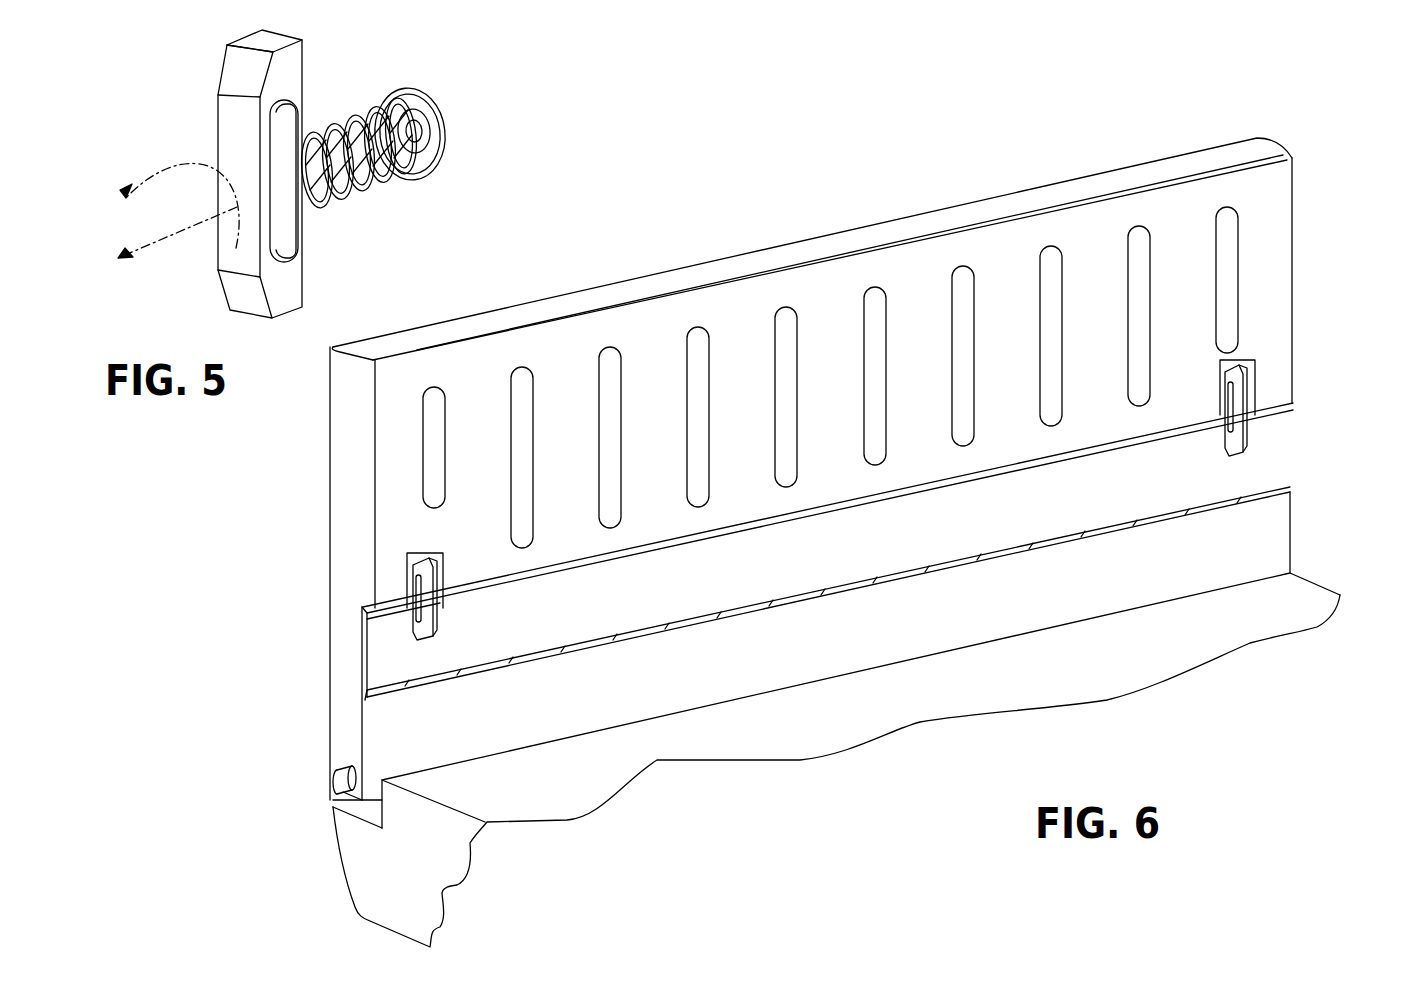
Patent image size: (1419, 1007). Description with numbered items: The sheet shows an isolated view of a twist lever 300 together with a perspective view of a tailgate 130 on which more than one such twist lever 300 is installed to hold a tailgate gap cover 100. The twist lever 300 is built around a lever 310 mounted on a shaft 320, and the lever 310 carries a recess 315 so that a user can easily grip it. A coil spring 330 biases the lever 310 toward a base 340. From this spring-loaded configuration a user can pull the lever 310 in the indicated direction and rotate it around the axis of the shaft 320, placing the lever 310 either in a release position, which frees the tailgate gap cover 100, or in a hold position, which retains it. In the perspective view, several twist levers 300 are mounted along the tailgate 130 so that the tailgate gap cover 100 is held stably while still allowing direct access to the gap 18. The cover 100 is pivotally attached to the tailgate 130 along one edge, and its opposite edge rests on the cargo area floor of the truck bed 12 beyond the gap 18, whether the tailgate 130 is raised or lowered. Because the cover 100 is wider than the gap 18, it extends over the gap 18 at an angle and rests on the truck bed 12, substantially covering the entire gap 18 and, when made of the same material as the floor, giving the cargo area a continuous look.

In FIG. 6, the truck bed 12 is at (1203, 627).
In FIG. 6, the gap 18 is at (1245, 573).
In FIG. 6, the tailgate gap cover 100 is at (388, 640).
In FIG. 6, the tailgate 130 is at (1270, 233).
In FIG. 5, the twist lever 300 is at (170, 308).
In FIG. 6, the twist lever 300 is at (418, 565).
In FIG. 5, the lever 310 is at (225, 128).
In FIG. 5, the recess 315 is at (287, 222).
In FIG. 5, the shaft 320 is at (387, 137).
In FIG. 5, the coil spring 330 is at (397, 183).
In FIG. 5, the base 340 is at (438, 120).